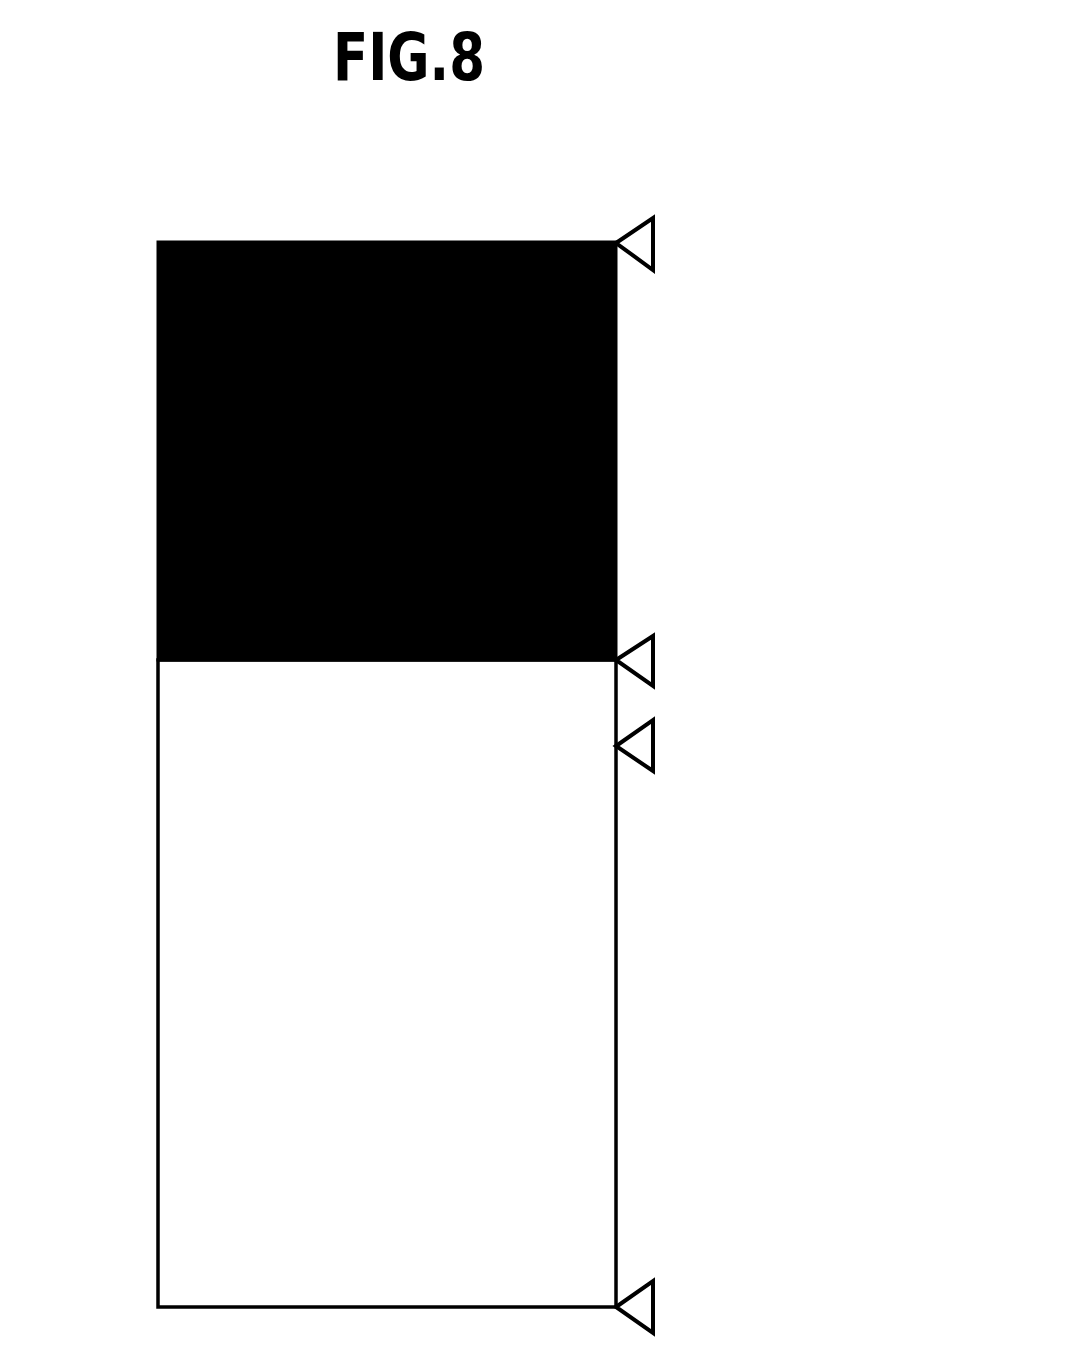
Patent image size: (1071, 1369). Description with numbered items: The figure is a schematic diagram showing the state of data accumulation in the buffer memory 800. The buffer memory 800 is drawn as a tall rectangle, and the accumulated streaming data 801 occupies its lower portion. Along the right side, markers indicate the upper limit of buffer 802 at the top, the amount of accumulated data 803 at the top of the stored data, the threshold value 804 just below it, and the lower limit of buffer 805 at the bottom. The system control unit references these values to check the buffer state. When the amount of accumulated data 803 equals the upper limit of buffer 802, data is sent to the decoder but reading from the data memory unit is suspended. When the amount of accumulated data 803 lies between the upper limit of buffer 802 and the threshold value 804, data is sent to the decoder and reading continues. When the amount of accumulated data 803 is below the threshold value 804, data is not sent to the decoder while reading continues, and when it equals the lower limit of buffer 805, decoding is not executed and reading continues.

The buffer memory 800 is at (149, 378).
The accumulated streaming data 801 is at (149, 780).
The upper limit of buffer 802 is at (648, 226).
The amount of accumulated data 803 is at (648, 640).
The threshold value 804 is at (648, 727).
The lower limit of buffer 805 is at (648, 1290).